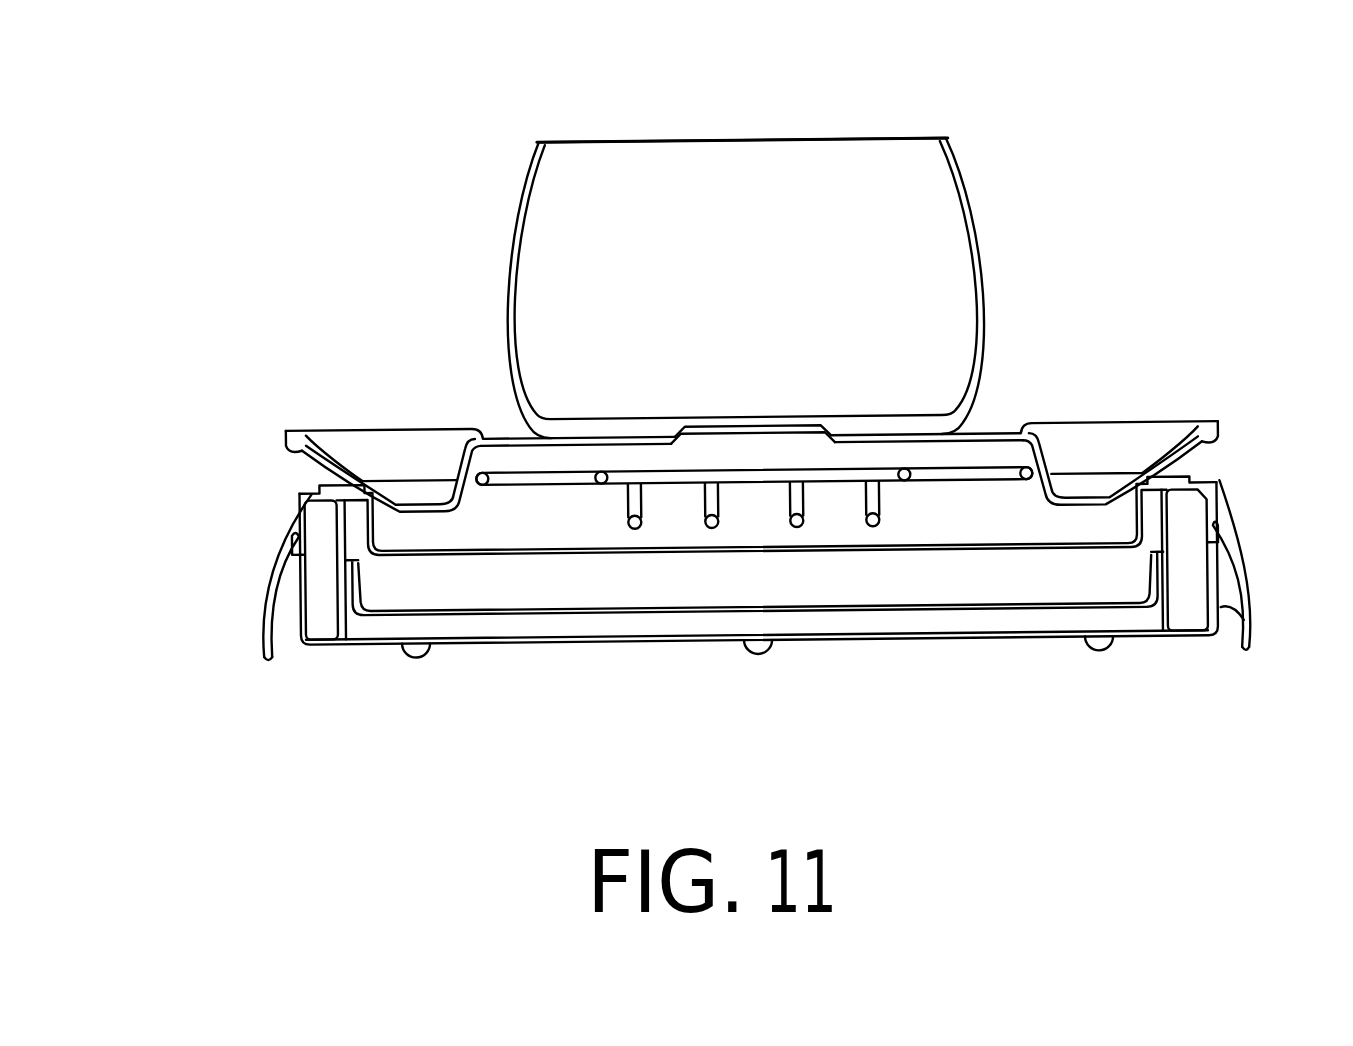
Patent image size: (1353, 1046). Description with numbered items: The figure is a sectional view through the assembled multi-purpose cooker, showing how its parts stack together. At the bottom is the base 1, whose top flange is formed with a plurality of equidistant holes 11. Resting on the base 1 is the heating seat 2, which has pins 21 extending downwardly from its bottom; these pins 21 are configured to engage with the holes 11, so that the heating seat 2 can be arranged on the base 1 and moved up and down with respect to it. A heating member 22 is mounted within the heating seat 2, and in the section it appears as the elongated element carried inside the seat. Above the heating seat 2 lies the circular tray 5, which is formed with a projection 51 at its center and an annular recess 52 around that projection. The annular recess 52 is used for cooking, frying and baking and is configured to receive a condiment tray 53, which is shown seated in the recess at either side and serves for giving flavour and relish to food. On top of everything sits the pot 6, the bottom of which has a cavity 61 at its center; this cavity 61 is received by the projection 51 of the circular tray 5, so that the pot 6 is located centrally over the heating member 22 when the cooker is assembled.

The base 1 is at (300, 623).
The heating seat 2 is at (694, 614).
The holes 11 is at (316, 615).
The pins 21 is at (368, 625).
The heating member 22 is at (653, 480).
The circular tray 5 is at (806, 538).
The projection 51 is at (772, 428).
The annular recess 52 is at (1097, 488).
The condiment tray 53 is at (1137, 442).
The pot 6 is at (711, 246).
The cavity 61 is at (752, 424).